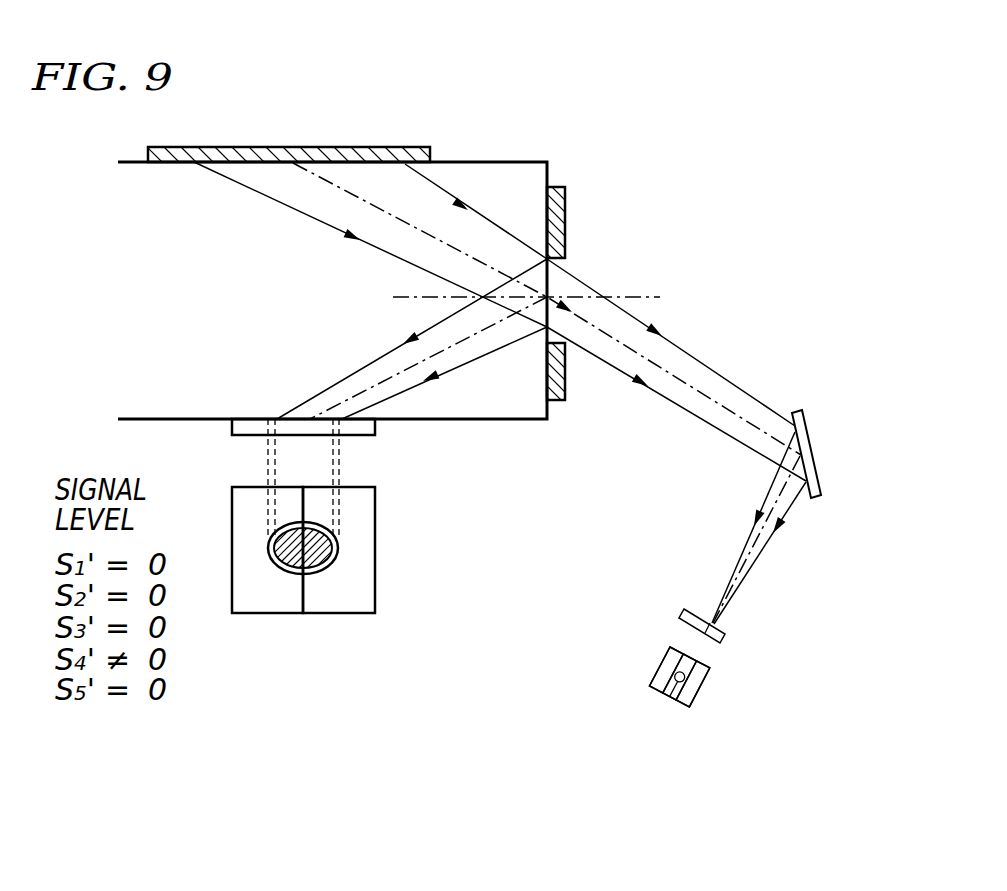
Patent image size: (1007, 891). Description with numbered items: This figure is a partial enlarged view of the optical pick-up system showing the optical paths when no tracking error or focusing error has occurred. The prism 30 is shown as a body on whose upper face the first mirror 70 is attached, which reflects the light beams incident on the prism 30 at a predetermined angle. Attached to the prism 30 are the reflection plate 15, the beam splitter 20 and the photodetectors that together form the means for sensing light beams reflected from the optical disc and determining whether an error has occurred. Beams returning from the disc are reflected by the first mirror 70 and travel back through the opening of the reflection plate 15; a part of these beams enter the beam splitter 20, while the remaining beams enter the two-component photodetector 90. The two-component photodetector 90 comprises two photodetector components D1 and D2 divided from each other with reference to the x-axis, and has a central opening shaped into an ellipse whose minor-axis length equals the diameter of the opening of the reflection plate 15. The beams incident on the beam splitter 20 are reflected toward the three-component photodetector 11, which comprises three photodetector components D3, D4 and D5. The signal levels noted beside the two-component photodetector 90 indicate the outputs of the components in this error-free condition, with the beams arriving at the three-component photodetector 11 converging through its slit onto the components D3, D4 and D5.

The three-component photodetector 11 is at (684, 679).
The reflection plate 15 is at (557, 217).
The beam splitter 20 is at (810, 427).
The prism 30 is at (497, 180).
The first mirror 70 is at (360, 148).
The two-component photodetector 90 is at (372, 428).
The photodetector component D1 is at (258, 597).
The photodetector component D2 is at (350, 597).
The photodetector component D3 is at (663, 668).
The photodetector component D4 is at (672, 693).
The photodetector component D5 is at (695, 700).